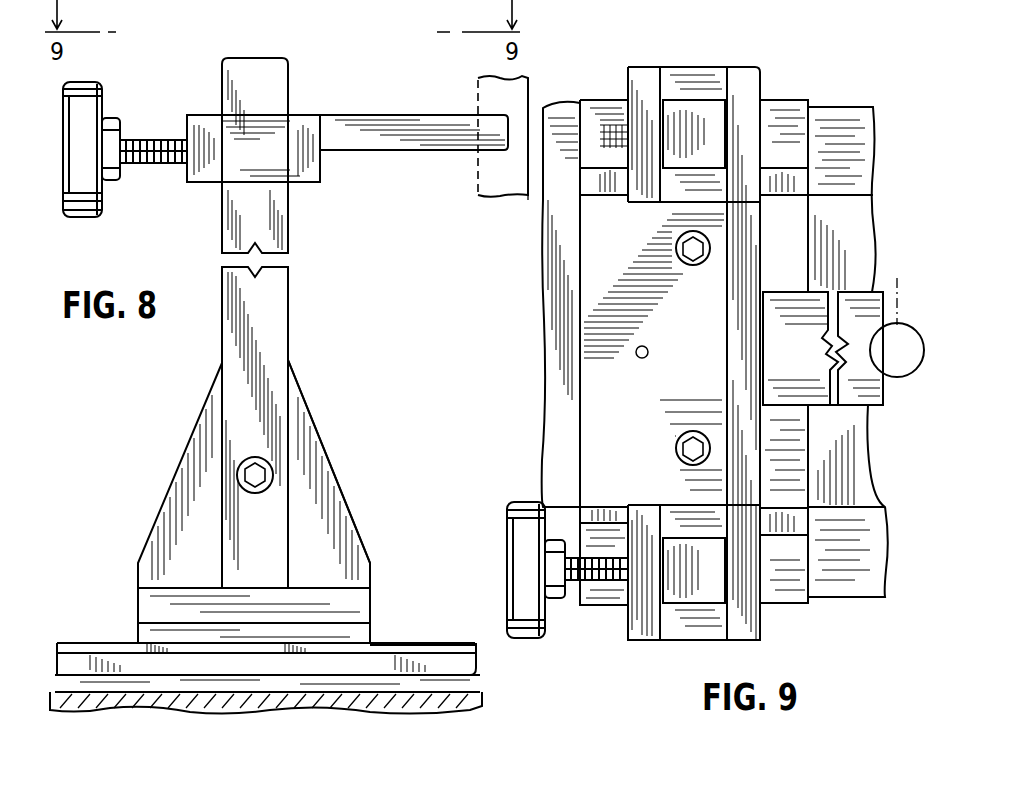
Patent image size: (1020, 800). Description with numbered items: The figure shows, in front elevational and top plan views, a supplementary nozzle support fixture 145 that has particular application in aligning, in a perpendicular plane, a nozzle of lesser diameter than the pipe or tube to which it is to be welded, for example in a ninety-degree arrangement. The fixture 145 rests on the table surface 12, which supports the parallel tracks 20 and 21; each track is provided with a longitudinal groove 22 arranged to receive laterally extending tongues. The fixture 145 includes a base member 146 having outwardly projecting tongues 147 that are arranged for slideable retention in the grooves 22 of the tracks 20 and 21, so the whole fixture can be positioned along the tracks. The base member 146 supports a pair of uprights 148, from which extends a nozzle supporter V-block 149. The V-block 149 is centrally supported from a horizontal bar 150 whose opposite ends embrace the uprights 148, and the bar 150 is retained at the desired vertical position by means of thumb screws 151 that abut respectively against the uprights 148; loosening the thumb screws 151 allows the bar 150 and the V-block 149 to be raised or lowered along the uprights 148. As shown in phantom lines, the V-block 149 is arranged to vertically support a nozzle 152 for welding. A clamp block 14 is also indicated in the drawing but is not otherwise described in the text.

In FIG. 8, the wall 12 is at (470, 706).
In FIG. 9, the wall 12 is at (866, 466).
In FIG. 9, the clamp block 14 is at (693, 590).
In FIG. 8, the panel 20 is at (442, 645).
In FIG. 9, the panel 20 is at (826, 205).
In FIG. 9, the wall portion 21 is at (858, 578).
In FIG. 8, the panel strip 22 is at (478, 665).
In FIG. 8, the clamp assembly 145 is at (307, 332).
In FIG. 8, the inclined side of base 146 is at (362, 599).
In FIG. 8, the base strip 147 is at (142, 645).
In FIG. 8, the base block 148 is at (233, 378).
In FIG. 9, the base block 148 is at (684, 108).
In FIG. 8, the bar 149 is at (380, 148).
In FIG. 9, the bar 149 is at (823, 348).
In FIG. 8, the clamp block 150 is at (305, 184).
In FIG. 9, the clamp block 150 is at (740, 318).
In FIG. 9, the knob 151 is at (512, 546).
In FIG. 8, the workpiece 152 is at (497, 193).
In FIG. 9, the workpiece 152 is at (897, 313).